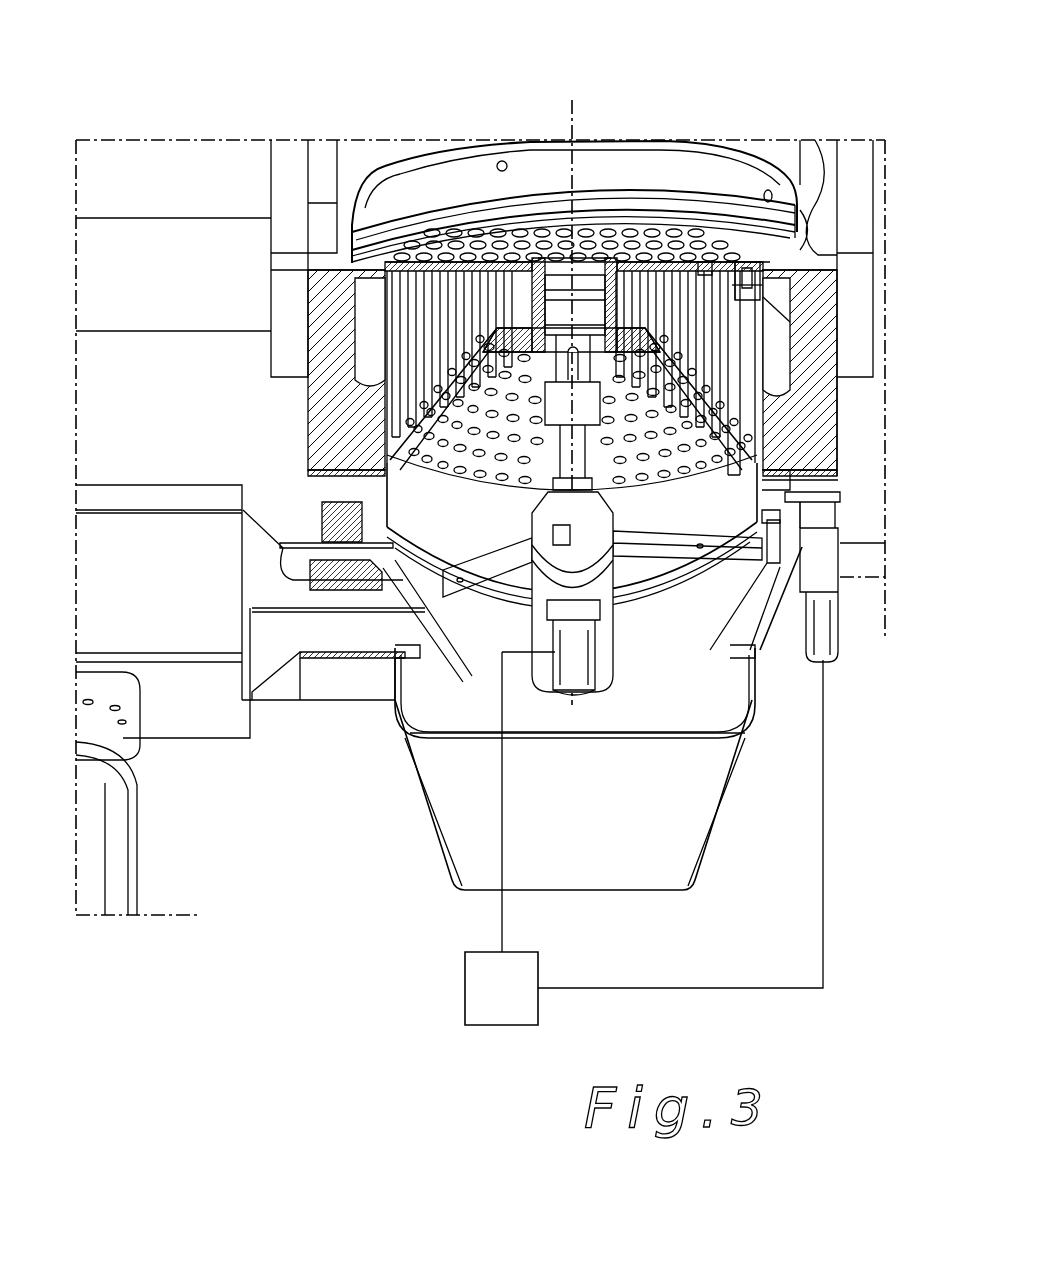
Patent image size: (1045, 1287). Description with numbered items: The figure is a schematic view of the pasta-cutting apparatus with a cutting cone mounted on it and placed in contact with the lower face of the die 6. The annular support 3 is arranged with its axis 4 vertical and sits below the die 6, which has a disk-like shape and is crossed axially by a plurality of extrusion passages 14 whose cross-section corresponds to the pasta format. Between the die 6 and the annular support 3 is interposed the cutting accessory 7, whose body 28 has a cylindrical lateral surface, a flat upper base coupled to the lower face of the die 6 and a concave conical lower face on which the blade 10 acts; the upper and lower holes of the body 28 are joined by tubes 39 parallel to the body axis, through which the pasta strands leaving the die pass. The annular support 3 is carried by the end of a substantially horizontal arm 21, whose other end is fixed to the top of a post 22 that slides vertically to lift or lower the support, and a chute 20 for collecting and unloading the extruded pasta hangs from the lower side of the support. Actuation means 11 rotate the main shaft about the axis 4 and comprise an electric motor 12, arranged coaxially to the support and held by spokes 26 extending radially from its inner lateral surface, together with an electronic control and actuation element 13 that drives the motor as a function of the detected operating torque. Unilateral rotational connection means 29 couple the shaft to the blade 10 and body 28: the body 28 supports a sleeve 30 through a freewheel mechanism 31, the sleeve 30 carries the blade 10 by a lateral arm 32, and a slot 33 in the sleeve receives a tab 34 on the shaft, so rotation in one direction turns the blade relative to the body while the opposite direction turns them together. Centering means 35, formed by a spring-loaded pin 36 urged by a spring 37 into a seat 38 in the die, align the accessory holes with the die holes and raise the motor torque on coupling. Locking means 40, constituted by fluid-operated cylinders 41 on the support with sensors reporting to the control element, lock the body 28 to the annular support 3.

The annular support 3 is at (768, 605).
The axis 4 is at (576, 108).
The die 6 is at (388, 197).
The cutting accessory 7 is at (768, 295).
The blade 10 is at (745, 422).
The actuation means 11 is at (606, 660).
The electric motor 12 is at (580, 652).
The control and actuation element 13 is at (492, 990).
The extrusion passages 14 is at (505, 230).
The chute 20 is at (660, 838).
The arm 21 is at (275, 700).
The post 22 is at (95, 720).
The spokes 26 is at (503, 565).
The body 28 is at (470, 228).
The unilateral rotational connection means 29 is at (562, 268).
The sleeve 30 is at (440, 356).
The freewheel mechanism 31 is at (582, 280).
The lateral arm 32 is at (640, 440).
The slot 33 is at (755, 377).
The tab 34 is at (410, 410).
The centering means 35 is at (748, 270).
The spring-loaded pin 36 is at (703, 265).
The spring 37 is at (740, 290).
The seat 38 is at (745, 255).
The tubes 39 is at (405, 322).
The locking means 40 is at (848, 650).
The fluid-operated cylinders 41 is at (822, 633).